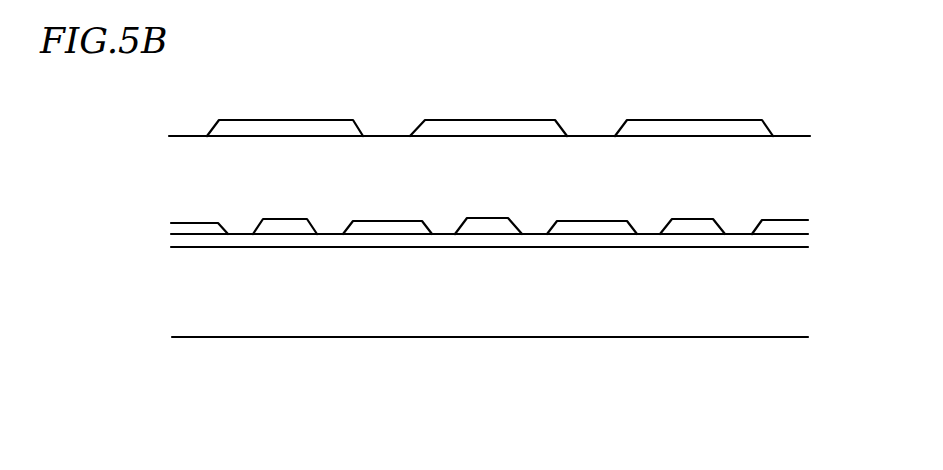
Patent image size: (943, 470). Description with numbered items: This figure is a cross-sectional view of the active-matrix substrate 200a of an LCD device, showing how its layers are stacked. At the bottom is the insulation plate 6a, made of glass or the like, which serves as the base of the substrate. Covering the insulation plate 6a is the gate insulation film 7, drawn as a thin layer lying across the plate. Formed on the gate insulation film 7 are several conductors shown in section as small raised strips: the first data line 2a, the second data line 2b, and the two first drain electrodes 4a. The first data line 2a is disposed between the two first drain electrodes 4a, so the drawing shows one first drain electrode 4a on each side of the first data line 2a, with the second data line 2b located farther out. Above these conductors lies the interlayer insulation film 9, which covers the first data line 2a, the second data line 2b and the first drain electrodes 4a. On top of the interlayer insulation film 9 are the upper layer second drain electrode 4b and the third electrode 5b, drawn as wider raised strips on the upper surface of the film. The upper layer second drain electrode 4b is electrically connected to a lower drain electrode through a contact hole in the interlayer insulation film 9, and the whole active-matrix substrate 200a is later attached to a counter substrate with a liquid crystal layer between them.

The active-matrix substrate 200a is at (698, 73).
The interlayer insulation film 9 is at (182, 160).
The third electrode 5b is at (312, 128).
The upper layer second drain electrode 4b is at (522, 128).
The gate insulation film 7 is at (172, 245).
The second data line 2b is at (288, 227).
The first drain electrode 4a is at (395, 228).
The first data line 2a is at (493, 228).
The insulation plate 6a is at (192, 305).